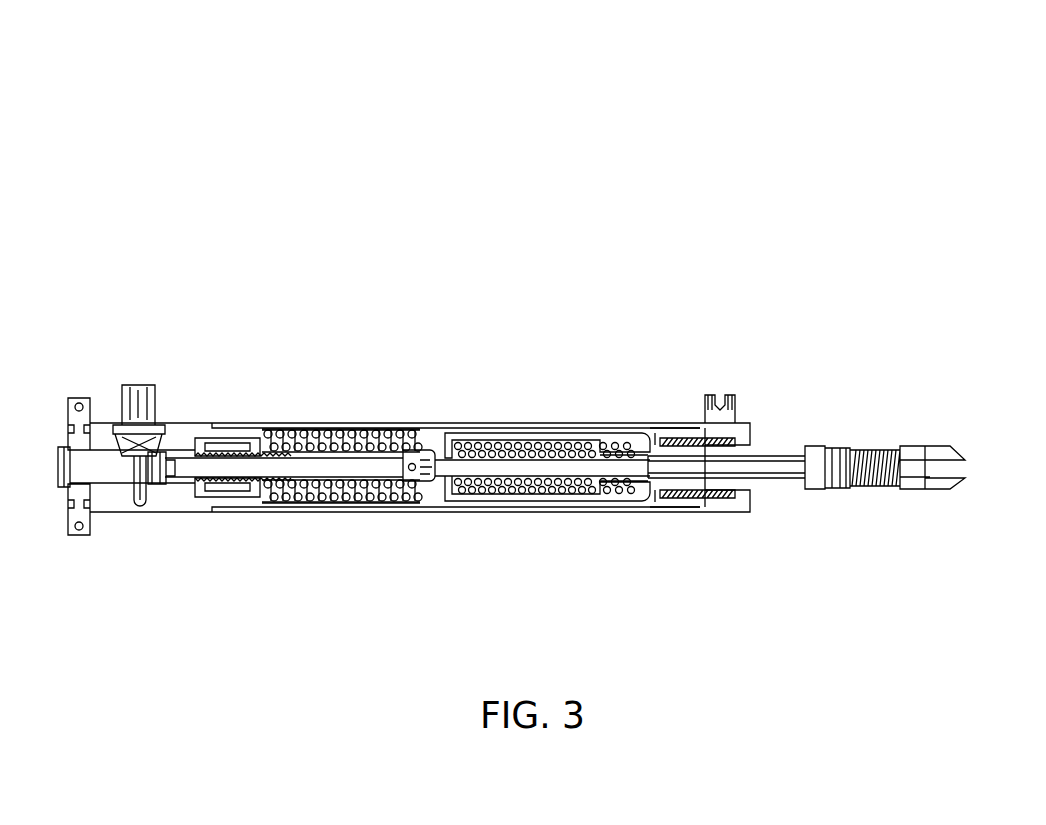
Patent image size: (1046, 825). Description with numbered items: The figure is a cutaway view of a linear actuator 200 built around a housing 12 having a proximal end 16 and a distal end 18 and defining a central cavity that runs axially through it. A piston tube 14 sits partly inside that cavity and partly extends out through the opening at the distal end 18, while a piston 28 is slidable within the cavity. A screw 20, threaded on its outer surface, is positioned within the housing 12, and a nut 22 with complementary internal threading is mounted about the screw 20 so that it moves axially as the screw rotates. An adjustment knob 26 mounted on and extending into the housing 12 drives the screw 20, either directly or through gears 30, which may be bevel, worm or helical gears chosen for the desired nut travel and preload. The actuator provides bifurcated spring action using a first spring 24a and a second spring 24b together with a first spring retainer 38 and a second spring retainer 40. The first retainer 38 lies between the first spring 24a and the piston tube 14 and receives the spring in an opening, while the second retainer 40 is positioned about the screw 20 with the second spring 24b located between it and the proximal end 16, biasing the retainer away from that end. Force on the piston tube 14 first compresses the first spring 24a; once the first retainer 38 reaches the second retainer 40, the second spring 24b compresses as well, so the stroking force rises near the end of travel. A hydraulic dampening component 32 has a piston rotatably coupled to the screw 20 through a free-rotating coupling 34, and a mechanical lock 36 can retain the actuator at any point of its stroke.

The linear actuator 200 is at (203, 160).
The housing 12 is at (487, 421).
The piston tube 14 is at (805, 415).
The proximal end 16 is at (93, 313).
The distal end 18 is at (771, 316).
The screw 20 is at (306, 466).
The nut 22 is at (228, 500).
The first spring 24a is at (480, 505).
The second spring 24b is at (316, 424).
The adjustment knob 26 is at (168, 384).
The piston 28 is at (538, 500).
The gears 30 is at (162, 497).
The hydraulic dampening component 32 is at (771, 480).
The coupling 34 is at (415, 490).
The mechanical lock 36 is at (705, 394).
The first spring retainer 38 is at (596, 513).
The second spring retainer 40 is at (348, 520).